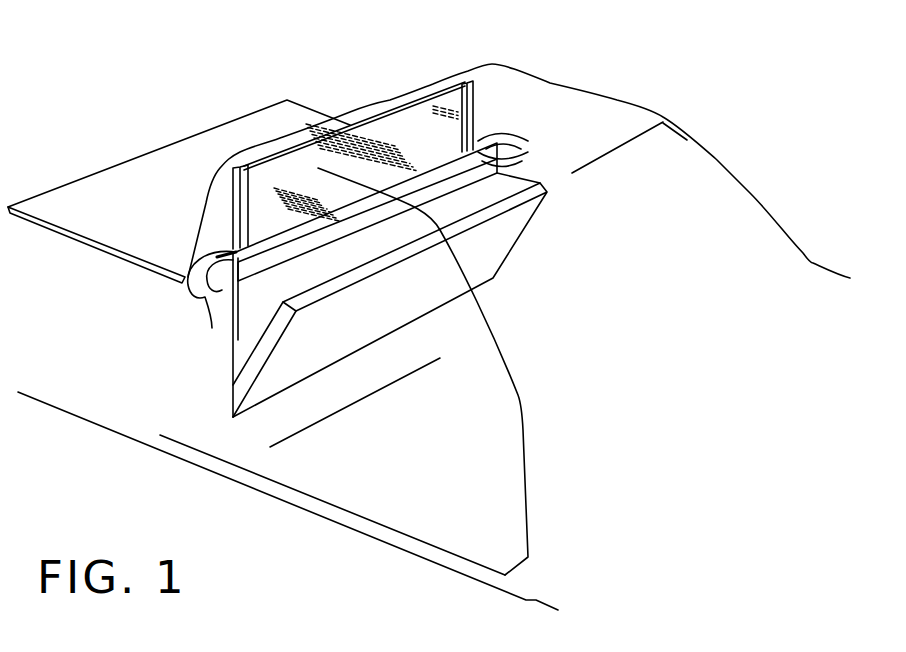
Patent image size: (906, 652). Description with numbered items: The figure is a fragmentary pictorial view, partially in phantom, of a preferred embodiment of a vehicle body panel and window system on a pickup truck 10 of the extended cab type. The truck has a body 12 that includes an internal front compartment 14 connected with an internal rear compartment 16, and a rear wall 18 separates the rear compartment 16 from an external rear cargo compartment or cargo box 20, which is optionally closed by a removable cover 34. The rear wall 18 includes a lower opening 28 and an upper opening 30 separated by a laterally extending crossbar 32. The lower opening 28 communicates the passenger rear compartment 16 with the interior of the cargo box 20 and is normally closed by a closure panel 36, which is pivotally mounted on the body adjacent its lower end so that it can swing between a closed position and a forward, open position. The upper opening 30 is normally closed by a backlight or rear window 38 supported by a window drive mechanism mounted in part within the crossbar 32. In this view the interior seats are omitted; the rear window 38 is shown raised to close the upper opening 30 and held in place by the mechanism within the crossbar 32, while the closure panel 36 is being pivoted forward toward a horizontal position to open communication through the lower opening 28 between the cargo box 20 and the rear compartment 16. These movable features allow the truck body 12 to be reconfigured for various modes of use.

The pickup truck 10 is at (667, 54).
The body 12 is at (665, 114).
The internal front compartment 14 is at (508, 514).
The internal rear compartment 16 is at (285, 465).
The rear wall 18 is at (224, 278).
The cargo box 20 is at (91, 246).
The lower opening 28 is at (242, 318).
The upper opening 30 is at (462, 97).
The crossbar 32 is at (499, 162).
The removable cover 34 is at (170, 148).
The closure panel 36 is at (278, 360).
The rear window 38 is at (418, 97).